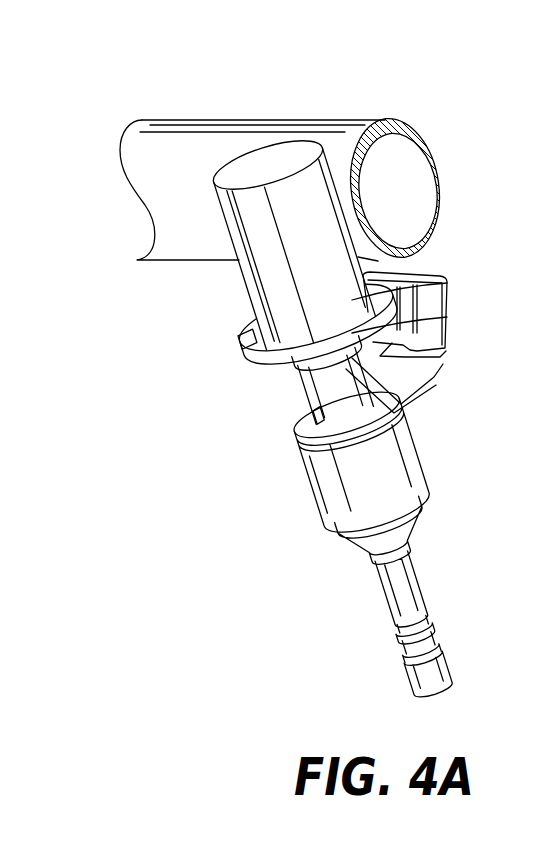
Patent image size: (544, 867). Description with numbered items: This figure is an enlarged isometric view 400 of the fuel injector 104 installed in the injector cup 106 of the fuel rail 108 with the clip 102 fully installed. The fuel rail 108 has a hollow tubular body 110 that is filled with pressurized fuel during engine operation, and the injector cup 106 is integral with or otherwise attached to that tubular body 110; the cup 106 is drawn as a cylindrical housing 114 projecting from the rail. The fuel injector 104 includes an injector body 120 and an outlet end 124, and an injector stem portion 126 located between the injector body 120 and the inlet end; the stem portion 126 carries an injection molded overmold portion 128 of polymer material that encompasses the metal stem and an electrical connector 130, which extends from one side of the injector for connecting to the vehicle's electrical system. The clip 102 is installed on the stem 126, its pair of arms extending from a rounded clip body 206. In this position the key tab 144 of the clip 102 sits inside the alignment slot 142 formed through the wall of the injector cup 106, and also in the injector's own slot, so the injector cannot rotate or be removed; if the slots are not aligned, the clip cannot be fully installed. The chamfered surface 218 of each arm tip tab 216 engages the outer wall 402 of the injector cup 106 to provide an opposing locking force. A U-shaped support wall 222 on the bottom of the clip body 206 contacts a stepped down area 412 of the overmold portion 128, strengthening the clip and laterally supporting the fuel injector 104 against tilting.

The enlarged isometric view 400 is at (291, 165).
The injector cup 106 is at (195, 187).
The hollow tubular body 110 is at (331, 118).
The fuel rail 108 is at (440, 163).
The injector housing 114 is at (226, 224).
The outer wall 402 is at (247, 290).
The chamfered surface 218 is at (248, 327).
The arm tip tab 216 is at (240, 342).
The stepped down area 412 is at (297, 367).
The injector stem portion 126 is at (301, 407).
The overmold portion 128 is at (315, 415).
The injector body 120 is at (314, 489).
The fuel injector 104 is at (311, 572).
The outlet end 124 is at (440, 692).
The clip 102 is at (302, 461).
The electrical connector 130 is at (437, 275).
The alignment slot 142 is at (447, 287).
The key tab 144 is at (447, 319).
The support wall 222 is at (403, 361).
The clip body 206 is at (400, 363).